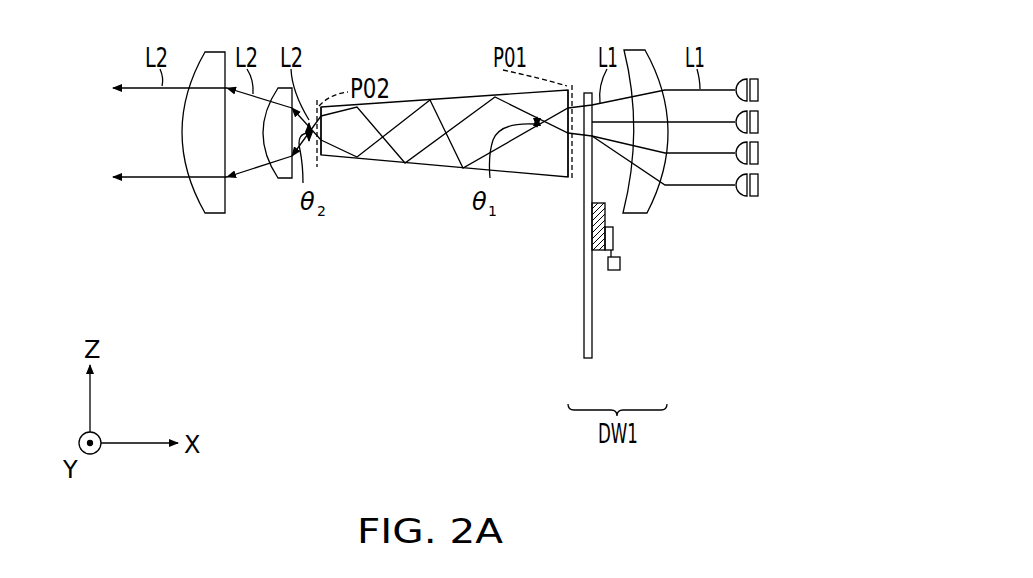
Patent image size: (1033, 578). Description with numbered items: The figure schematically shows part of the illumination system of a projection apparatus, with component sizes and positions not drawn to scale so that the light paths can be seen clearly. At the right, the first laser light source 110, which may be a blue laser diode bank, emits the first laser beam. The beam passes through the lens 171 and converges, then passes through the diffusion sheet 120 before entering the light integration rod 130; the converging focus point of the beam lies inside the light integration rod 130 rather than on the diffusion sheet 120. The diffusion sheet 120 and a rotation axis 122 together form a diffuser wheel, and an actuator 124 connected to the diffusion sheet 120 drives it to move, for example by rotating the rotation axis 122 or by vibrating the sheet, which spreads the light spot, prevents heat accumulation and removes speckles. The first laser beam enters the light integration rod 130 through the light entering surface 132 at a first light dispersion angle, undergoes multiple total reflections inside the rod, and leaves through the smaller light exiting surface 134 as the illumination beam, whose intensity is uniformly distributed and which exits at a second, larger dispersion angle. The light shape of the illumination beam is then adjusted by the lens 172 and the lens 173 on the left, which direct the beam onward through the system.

The first laser light source 110 is at (743, 196).
The diffusion sheet 120 is at (586, 360).
The rotation axis 122 is at (598, 252).
The actuator 124 is at (617, 270).
The light integration rod 130 is at (443, 160).
The light entering surface 132 is at (569, 106).
The light exiting surface 134 is at (319, 113).
The lens 171 is at (647, 198).
The lens 172 is at (284, 178).
The lens 173 is at (215, 202).